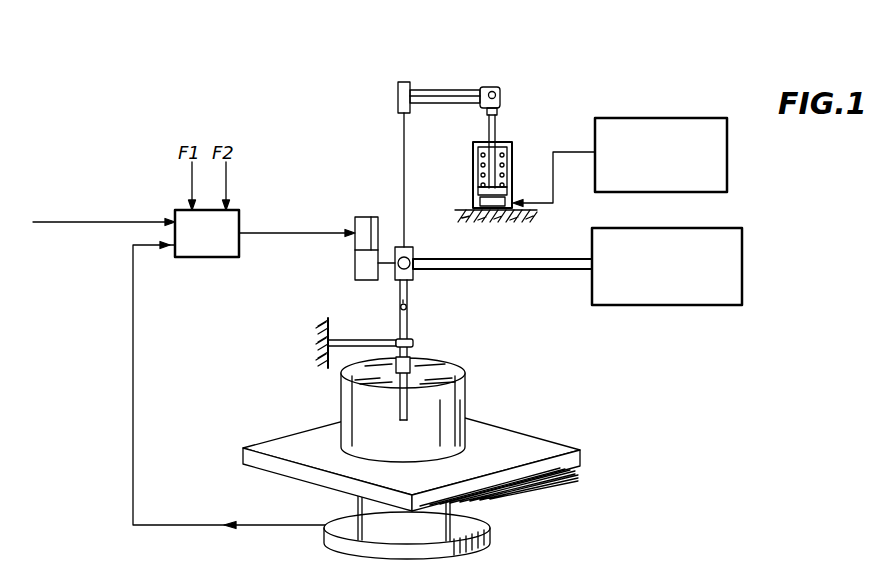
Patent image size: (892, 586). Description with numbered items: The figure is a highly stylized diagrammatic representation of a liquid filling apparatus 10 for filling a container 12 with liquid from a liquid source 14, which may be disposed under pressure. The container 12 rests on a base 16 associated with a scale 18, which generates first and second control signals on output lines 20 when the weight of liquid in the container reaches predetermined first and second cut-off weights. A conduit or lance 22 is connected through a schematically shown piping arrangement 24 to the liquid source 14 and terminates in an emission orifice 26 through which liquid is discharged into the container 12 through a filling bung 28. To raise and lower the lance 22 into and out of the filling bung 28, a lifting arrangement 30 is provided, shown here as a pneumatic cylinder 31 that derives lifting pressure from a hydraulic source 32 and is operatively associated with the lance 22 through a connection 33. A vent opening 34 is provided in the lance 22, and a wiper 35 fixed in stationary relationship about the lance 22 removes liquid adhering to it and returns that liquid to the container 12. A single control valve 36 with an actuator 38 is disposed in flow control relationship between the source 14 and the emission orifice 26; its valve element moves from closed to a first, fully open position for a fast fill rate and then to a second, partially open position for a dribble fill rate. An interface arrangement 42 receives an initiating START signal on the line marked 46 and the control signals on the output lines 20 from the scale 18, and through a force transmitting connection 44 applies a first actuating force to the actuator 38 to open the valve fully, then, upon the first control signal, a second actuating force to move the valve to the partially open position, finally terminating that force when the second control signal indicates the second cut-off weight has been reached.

The filling apparatus 10 is at (272, 329).
The container 12 is at (470, 419).
The liquid source 14 is at (725, 306).
The base 16 is at (560, 470).
The scale 18 is at (490, 543).
The output lines 20 is at (134, 400).
The conduit (lance) 22 is at (408, 322).
The piping arrangement 24 is at (527, 262).
The emission orifice 26 is at (466, 407).
The filling bung 28 is at (410, 365).
The lifting arrangement 30 is at (500, 120).
The pneumatic cylinder 31 is at (513, 167).
The hydraulic source 32 is at (727, 186).
The connection 33 is at (404, 148).
The vent opening 34 is at (400, 308).
The wiper 35 is at (413, 342).
The control valve 36 is at (412, 273).
The actuator 38 is at (357, 277).
The interface arrangement 42 is at (205, 258).
The force transmitting connection 44 is at (276, 235).
The start signal line 46 is at (118, 222).